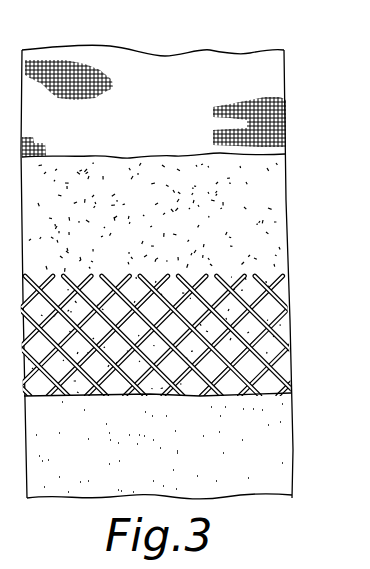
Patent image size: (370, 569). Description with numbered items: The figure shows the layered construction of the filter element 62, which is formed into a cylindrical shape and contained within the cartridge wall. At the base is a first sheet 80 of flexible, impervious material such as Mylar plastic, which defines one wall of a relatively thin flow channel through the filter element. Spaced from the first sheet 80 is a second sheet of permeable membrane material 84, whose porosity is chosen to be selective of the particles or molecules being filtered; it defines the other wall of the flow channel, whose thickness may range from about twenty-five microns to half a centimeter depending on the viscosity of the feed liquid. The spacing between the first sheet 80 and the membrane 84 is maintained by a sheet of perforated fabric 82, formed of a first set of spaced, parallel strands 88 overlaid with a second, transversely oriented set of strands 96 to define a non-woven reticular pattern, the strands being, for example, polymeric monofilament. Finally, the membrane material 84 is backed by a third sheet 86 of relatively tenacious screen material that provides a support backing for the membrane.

The filter element 62 is at (147, 37).
The third sheet of screen material 86 is at (273, 95).
The second sheet of permeable membrane material 84 is at (268, 222).
The sheet of perforated fabric 82 is at (285, 282).
The first set of scrim strands 96 is at (286, 323).
The first set of spaced, parallel strands 88 is at (285, 350).
The first sheet of flexible, impervious material 80 is at (280, 453).